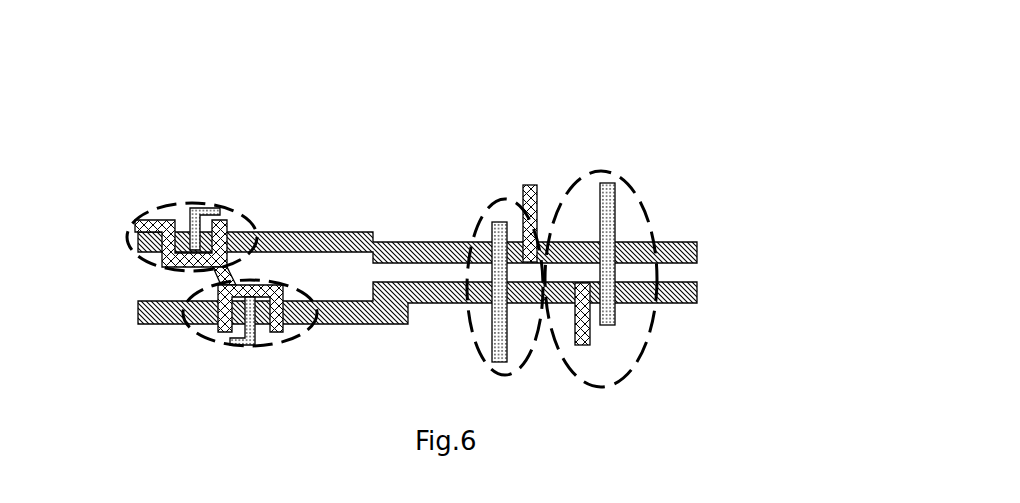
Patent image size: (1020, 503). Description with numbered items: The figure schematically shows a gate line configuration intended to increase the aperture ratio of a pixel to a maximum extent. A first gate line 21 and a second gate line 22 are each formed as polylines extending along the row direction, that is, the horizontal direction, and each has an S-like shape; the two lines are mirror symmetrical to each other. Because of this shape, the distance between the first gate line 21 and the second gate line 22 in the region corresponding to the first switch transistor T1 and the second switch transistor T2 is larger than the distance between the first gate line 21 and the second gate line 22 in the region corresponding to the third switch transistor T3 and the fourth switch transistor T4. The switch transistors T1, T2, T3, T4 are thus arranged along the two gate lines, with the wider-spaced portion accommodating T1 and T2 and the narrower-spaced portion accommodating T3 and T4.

The first gate line 21 is at (417, 187).
The second gate line 22 is at (417, 220).
The first switch transistor T1 is at (146, 195).
The second switch transistor T2 is at (176, 333).
The third switch transistor T3 is at (662, 280).
The fourth switch transistor T4 is at (690, 200).